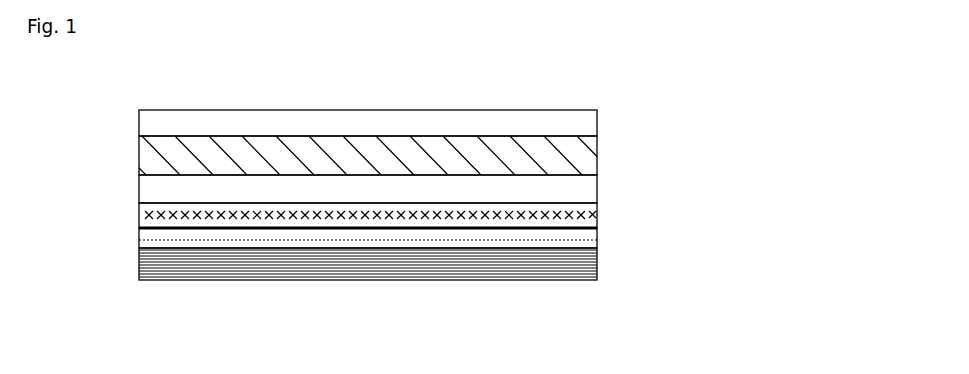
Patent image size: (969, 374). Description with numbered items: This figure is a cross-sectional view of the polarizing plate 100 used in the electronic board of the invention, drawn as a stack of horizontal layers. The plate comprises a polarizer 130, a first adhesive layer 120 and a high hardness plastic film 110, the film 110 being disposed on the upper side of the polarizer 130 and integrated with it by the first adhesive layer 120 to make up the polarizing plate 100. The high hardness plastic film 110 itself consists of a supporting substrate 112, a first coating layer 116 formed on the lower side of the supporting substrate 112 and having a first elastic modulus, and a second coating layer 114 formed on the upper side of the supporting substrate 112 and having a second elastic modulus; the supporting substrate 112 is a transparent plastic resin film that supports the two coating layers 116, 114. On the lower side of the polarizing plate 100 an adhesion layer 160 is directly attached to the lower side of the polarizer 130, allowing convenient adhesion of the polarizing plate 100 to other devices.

The polarizing plate 100 is at (464, 177).
The high hardness plastic film 110 is at (432, 143).
The second coating layer 114 is at (419, 113).
The supporting substrate 112 is at (404, 147).
The first coating layer 116 is at (419, 179).
The first adhesive layer 120 is at (447, 201).
The polarizer 130 is at (447, 224).
The adhesion layer 160 is at (447, 260).